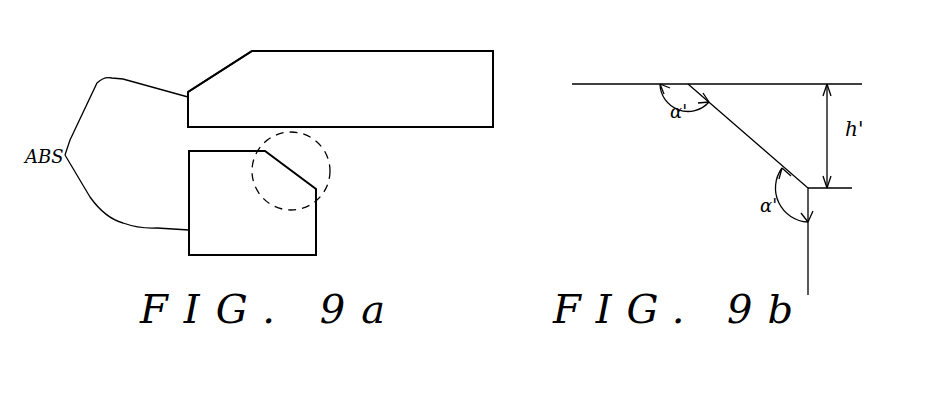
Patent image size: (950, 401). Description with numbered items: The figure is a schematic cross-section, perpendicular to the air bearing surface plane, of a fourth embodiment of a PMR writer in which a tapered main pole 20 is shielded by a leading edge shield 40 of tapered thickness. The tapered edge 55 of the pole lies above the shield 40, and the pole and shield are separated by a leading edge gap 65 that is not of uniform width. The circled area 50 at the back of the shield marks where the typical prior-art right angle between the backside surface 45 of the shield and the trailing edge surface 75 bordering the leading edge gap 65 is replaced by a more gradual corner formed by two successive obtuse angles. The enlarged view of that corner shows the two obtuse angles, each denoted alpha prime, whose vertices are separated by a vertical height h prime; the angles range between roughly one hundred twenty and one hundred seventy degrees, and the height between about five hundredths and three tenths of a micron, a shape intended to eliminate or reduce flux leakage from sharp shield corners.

The tapered main pole 20 is at (478, 83).
The tapered edge 55 is at (220, 65).
The leading edge gap 65 is at (208, 134).
The trailing edge surface of the shield 75 is at (206, 152).
The circled area 50 is at (330, 153).
The leading edge shield 40 is at (292, 216).
The backside surface of the shield 45 is at (316, 236).